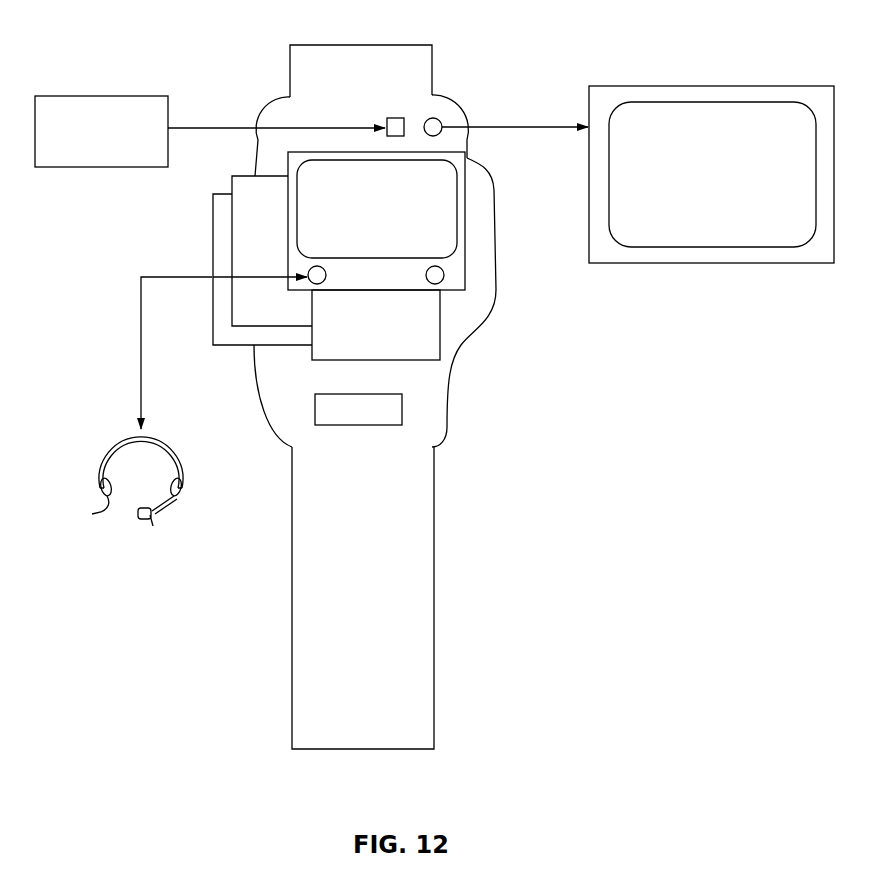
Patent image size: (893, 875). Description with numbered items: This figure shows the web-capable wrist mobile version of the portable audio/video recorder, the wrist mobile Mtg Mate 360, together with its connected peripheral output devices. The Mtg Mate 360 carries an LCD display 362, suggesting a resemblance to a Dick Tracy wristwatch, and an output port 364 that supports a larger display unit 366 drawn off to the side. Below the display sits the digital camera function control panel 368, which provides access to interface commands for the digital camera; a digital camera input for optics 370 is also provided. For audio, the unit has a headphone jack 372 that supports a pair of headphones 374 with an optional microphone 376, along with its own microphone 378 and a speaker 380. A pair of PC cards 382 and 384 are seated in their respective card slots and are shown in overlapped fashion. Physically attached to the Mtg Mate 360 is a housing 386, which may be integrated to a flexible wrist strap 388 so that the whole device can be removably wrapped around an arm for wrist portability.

The wrist mobile Mtg Mate 360 is at (407, 395).
The LCD display 362 is at (400, 219).
The output port 364 is at (436, 118).
The larger display unit 366 is at (735, 186).
The digital camera function control panel 368 is at (399, 337).
The digital camera input for optics 370 is at (125, 144).
The headphone jack 372 is at (319, 266).
The pair of headphones 374 is at (108, 500).
The optional microphone 376 is at (151, 519).
The microphone 378 is at (445, 277).
The speaker 380 is at (358, 426).
The PC card 382 is at (284, 232).
The PC card 384 is at (212, 245).
The housing 386 is at (452, 400).
The flexible wrist strap 388 is at (290, 72).